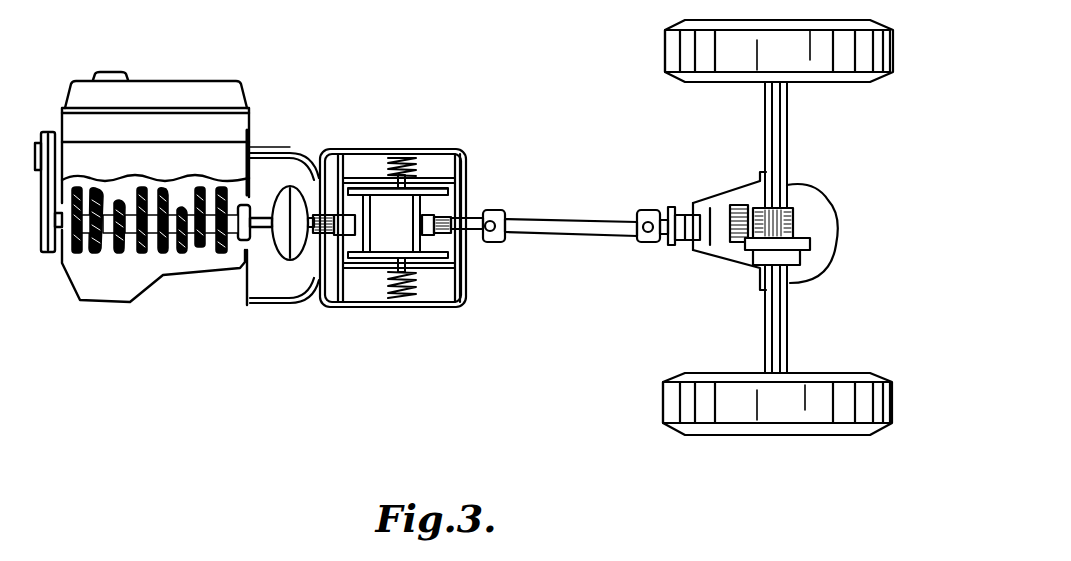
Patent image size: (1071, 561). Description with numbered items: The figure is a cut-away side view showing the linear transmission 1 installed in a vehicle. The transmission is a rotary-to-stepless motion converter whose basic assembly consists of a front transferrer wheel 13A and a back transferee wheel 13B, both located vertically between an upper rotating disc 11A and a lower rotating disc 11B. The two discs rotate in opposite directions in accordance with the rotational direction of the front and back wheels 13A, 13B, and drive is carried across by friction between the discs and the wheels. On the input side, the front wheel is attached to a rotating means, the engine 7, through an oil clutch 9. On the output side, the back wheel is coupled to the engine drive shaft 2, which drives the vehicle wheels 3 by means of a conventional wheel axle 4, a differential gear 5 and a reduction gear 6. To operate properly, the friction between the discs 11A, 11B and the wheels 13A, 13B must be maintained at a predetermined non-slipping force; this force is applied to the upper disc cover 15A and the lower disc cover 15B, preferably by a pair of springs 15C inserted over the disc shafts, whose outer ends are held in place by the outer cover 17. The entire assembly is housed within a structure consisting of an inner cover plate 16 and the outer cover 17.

The linear transmission 1 is at (482, 70).
The drive shaft 2 is at (603, 226).
The vehicle wheels 3 is at (665, 53).
The wheel axle 4 is at (778, 126).
The differential gear 5 is at (748, 252).
The reduction gear 6 is at (727, 250).
The engine 7 is at (188, 93).
The oil clutch 9 is at (290, 255).
The upper rotating disc 11A is at (452, 192).
The lower rotating disc 11B is at (448, 256).
The front transferrer wheel 13A is at (385, 186).
The back transferee wheel 13B is at (418, 212).
The upper disc cover 15A is at (437, 183).
The lower disc cover 15B is at (453, 268).
The springs 15C is at (401, 181).
The inner cover plate 16 is at (322, 182).
The outer cover 17 is at (448, 306).